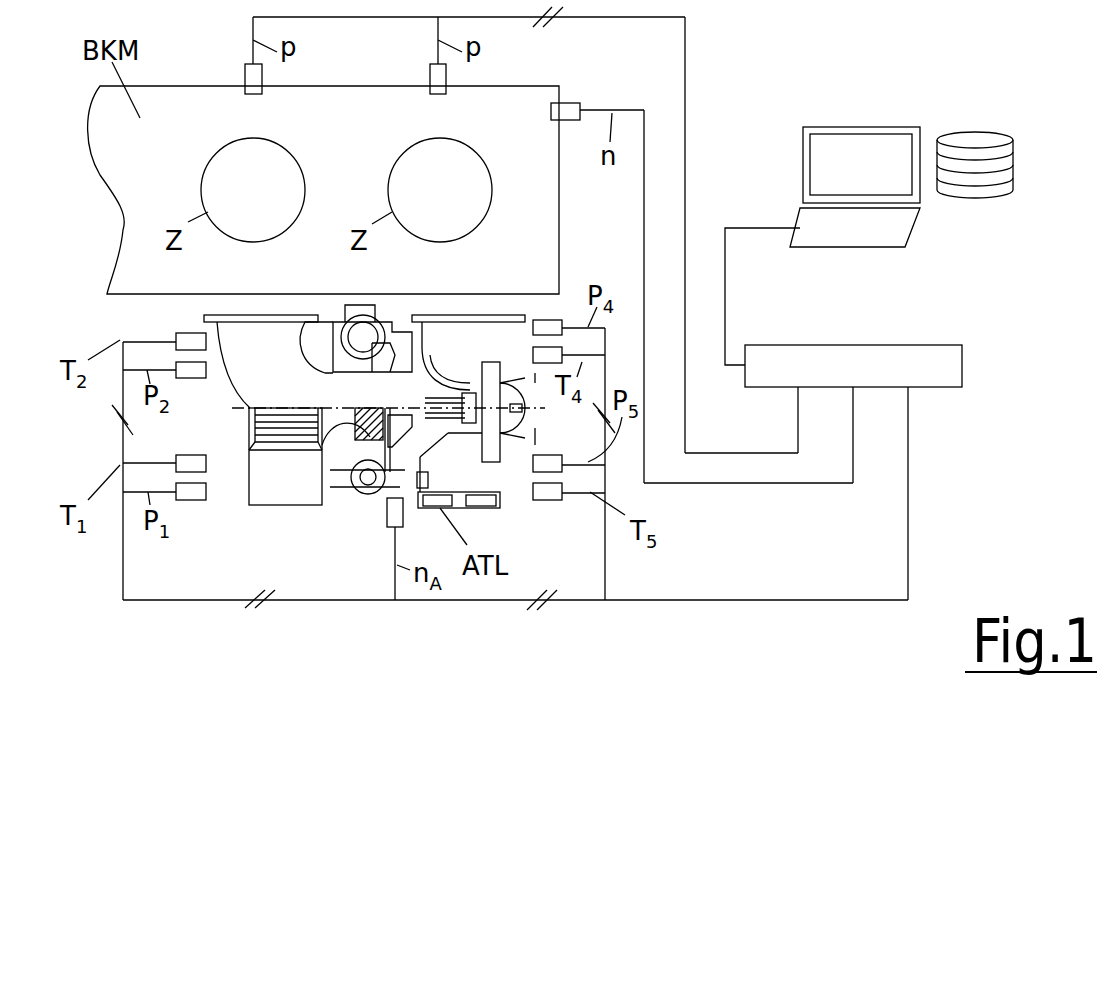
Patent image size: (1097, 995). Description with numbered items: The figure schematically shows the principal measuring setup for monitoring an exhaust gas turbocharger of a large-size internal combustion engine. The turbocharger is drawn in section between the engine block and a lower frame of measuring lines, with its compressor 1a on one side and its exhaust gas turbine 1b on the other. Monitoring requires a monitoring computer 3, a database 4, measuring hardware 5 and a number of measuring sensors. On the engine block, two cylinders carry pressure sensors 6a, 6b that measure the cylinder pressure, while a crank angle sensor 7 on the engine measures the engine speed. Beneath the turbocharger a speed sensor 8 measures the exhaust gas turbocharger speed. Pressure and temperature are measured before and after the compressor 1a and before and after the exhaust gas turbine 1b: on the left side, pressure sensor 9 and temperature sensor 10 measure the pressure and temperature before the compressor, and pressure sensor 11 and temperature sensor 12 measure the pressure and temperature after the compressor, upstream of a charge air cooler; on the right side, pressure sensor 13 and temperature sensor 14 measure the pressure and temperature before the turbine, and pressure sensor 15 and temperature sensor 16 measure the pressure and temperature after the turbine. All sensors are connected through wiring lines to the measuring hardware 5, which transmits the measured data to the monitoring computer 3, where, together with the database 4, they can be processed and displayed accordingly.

The compressor 1a is at (338, 455).
The exhaust gas turbine 1b is at (505, 480).
The monitoring computer 3 is at (857, 158).
The database 4 is at (970, 142).
The measuring hardware 5 is at (860, 362).
The pressure sensor 6a is at (430, 68).
The pressure sensor 6b is at (245, 68).
The crank angle sensor 7 is at (566, 102).
The speed sensor 8 is at (385, 527).
The pressure sensor 9 is at (175, 485).
The temperature sensor 10 is at (190, 457).
The pressure sensor 11 is at (173, 365).
The temperature sensor 12 is at (190, 333).
The pressure sensor 13 is at (567, 318).
The temperature sensor 14 is at (565, 345).
The pressure sensor 15 is at (562, 458).
The temperature sensor 16 is at (565, 483).